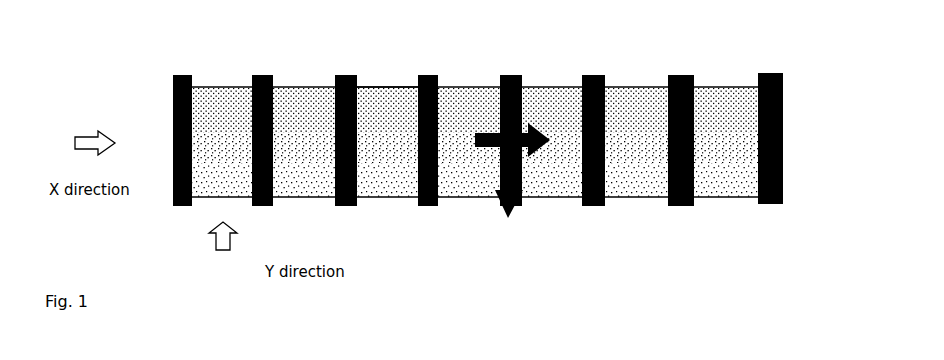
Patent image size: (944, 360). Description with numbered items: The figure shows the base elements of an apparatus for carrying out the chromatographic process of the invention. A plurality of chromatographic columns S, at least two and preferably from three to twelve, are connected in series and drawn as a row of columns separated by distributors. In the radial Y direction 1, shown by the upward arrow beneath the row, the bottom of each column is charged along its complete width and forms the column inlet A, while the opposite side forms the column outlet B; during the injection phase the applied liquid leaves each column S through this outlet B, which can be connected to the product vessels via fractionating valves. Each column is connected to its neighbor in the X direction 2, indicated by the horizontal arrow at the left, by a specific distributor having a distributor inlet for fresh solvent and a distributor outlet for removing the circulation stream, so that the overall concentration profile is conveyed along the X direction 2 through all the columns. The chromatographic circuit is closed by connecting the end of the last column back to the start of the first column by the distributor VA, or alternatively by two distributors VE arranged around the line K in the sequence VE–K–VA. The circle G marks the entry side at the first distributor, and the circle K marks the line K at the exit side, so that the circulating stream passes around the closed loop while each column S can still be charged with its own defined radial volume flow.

The distributor V_A VA is at (177, 73).
The chromatographic column S is at (228, 86).
The distributor V_E VE is at (771, 71).
The gate/entry side electrode G is at (293, 140).
The line K is at (694, 140).
The column outlet B is at (387, 90).
The column inlet A is at (478, 193).
The X direction 2 is at (83, 143).
The Y direction 1 is at (223, 249).